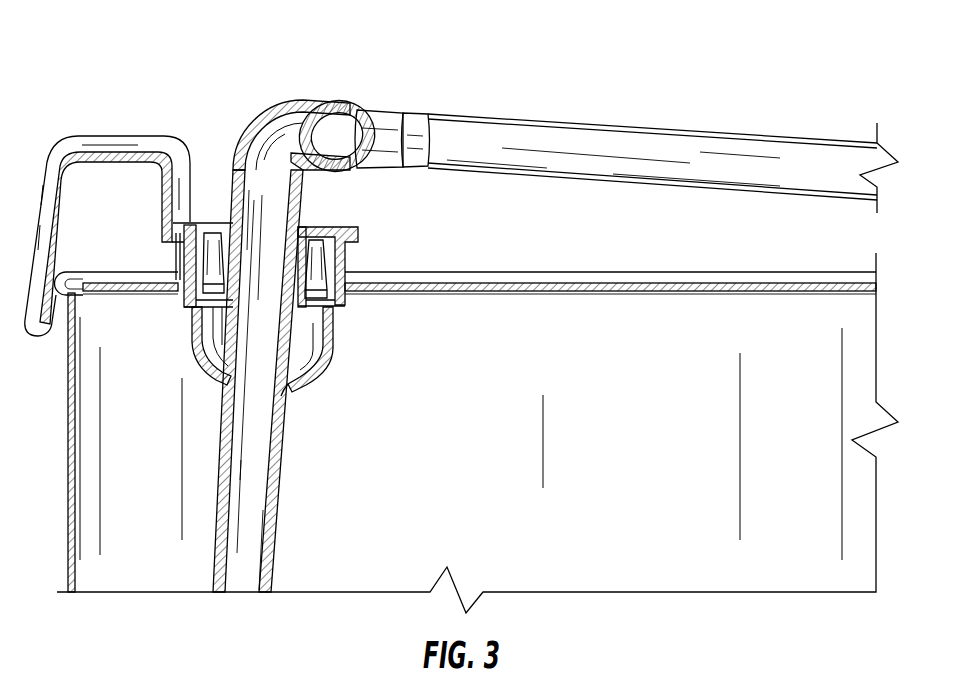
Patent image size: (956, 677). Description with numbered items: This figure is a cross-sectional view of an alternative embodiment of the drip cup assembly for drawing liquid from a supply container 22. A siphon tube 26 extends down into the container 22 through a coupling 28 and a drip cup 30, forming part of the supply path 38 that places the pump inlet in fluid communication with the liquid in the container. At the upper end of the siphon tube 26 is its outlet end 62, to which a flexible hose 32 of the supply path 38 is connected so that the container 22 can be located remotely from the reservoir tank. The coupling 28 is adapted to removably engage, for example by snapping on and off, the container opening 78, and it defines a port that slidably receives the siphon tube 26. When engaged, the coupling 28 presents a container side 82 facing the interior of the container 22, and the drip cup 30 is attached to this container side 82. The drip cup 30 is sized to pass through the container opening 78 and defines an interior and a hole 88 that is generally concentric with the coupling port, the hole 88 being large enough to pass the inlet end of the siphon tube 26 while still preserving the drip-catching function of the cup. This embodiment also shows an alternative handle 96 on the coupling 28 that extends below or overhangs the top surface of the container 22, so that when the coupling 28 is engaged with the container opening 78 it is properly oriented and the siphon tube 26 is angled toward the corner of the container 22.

The container 22 is at (852, 357).
The siphon tube 26 is at (277, 490).
The coupling 28 is at (357, 253).
The drip cup 30 is at (332, 336).
The hose 32 is at (628, 137).
The supply path 38 is at (486, 124).
The outlet end 62 is at (265, 196).
The container opening 78 is at (337, 293).
The container side 82 is at (218, 313).
The hole 88 is at (288, 384).
The handle 96 is at (112, 142).